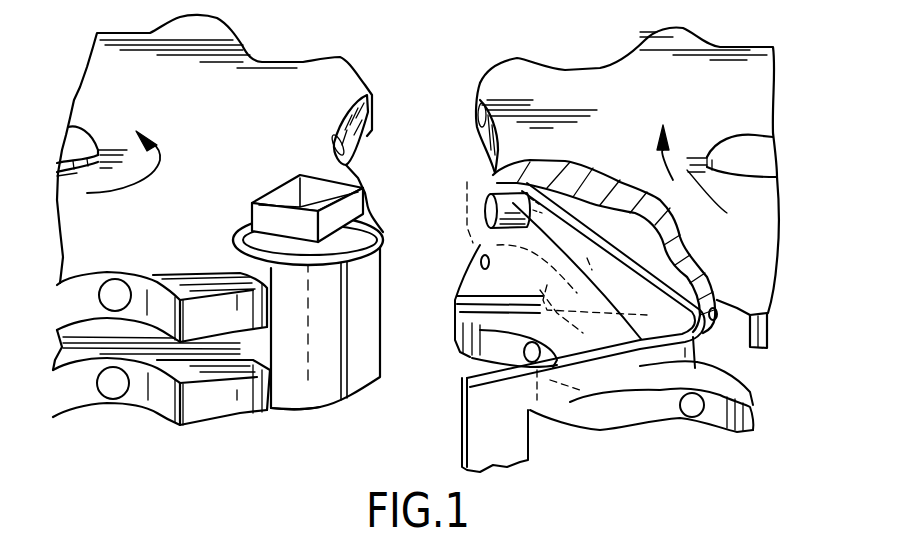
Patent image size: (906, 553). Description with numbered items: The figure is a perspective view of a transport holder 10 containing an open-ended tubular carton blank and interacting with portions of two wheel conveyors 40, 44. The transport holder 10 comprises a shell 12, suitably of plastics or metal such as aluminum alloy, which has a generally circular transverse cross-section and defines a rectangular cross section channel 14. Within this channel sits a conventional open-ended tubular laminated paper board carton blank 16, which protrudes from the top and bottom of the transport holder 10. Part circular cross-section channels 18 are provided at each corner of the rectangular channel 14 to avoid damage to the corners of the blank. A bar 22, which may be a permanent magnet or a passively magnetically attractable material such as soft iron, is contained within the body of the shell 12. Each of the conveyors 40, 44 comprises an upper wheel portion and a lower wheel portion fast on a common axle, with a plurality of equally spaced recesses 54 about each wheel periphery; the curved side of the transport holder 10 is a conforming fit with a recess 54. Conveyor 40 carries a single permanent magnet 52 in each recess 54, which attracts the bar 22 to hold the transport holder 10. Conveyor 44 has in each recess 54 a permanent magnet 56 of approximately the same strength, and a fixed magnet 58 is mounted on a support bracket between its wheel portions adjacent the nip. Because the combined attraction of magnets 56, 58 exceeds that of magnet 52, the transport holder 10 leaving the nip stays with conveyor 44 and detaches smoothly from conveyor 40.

The transport holder 10 is at (319, 404).
The shell 12 is at (295, 409).
The rectangular cross section channel 14 is at (383, 232).
The open-ended tubular laminated paper board carton blank 16 is at (364, 207).
The part circular cross-section channels 18 is at (239, 246).
The bar 22 is at (306, 250).
The conveyor 40 is at (368, 86).
The conveyor 44 is at (486, 87).
The permanent magnet 52 is at (116, 280).
The recesses 54 is at (303, 63).
The permanent magnet 56 is at (486, 262).
The fixed magnet 58 is at (480, 200).